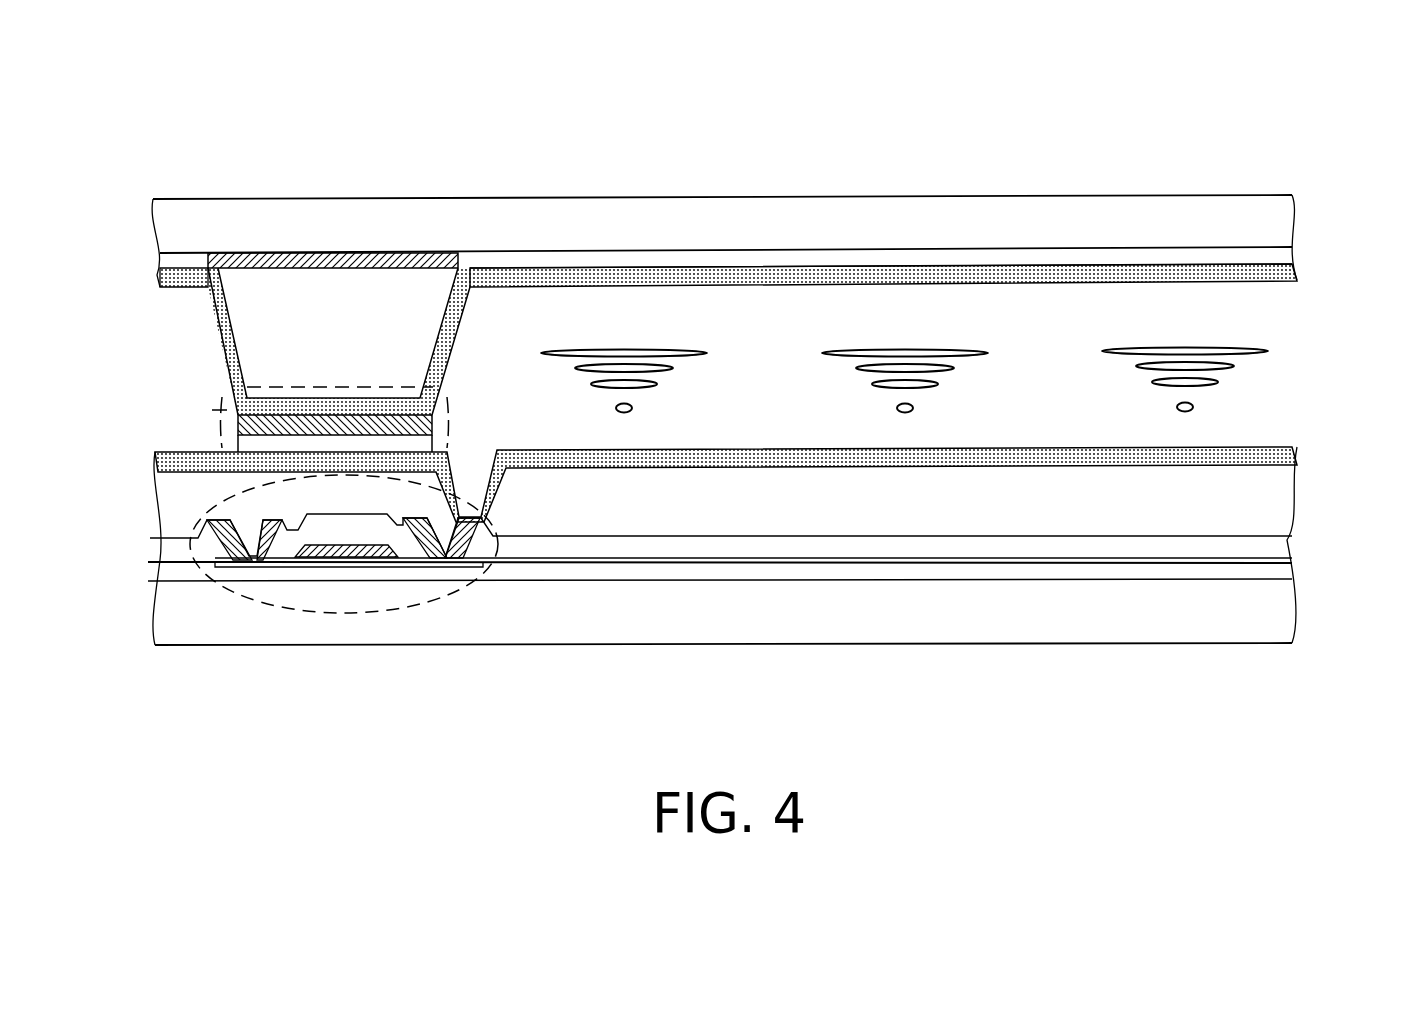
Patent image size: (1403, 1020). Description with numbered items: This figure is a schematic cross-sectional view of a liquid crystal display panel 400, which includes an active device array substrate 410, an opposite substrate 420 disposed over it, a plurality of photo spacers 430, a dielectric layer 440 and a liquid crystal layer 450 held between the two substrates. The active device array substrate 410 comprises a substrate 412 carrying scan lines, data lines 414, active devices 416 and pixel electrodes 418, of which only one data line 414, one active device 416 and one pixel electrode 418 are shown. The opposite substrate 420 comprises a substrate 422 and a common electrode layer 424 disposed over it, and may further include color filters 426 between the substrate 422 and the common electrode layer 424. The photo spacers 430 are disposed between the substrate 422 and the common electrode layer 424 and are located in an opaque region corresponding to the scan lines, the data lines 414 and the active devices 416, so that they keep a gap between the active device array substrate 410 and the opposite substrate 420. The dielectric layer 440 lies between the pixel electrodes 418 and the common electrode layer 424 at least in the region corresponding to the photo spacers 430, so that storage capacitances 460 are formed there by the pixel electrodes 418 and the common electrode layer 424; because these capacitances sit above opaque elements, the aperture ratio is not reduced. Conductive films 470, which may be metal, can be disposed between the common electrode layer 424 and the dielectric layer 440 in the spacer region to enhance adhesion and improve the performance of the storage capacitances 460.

The liquid crystal display panel 400 is at (1338, 733).
The active device array substrate 410 is at (1326, 448).
The substrate 412 is at (920, 625).
The data line 414 is at (230, 541).
The active device 416 is at (347, 613).
The pixel electrode 418 is at (737, 460).
The opposite substrate 420 is at (1326, 195).
The substrate 422 is at (1153, 218).
The common electrode layer 424 is at (1020, 267).
The color filter 426 is at (181, 268).
The photo spacer 430 is at (240, 343).
The dielectric layer 440 is at (240, 447).
The liquid crystal layer 450 is at (1326, 281).
The storage capacitance 460 is at (208, 410).
The conductive film 470 is at (337, 418).